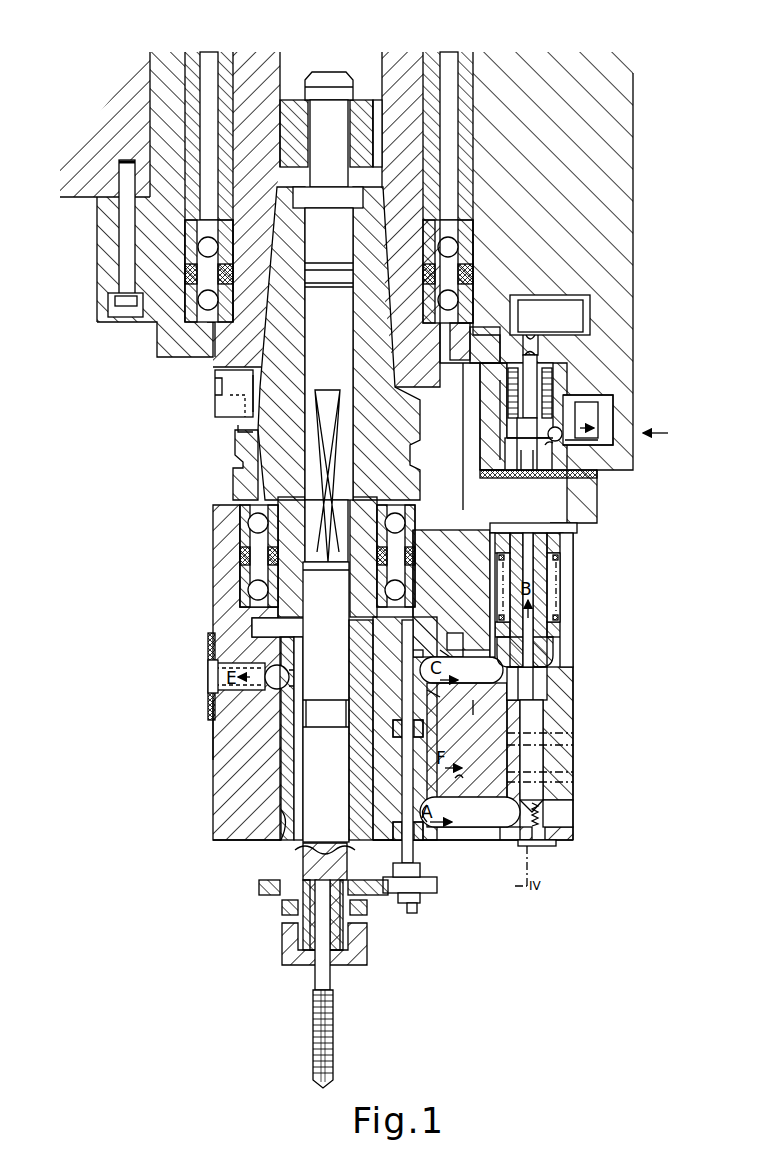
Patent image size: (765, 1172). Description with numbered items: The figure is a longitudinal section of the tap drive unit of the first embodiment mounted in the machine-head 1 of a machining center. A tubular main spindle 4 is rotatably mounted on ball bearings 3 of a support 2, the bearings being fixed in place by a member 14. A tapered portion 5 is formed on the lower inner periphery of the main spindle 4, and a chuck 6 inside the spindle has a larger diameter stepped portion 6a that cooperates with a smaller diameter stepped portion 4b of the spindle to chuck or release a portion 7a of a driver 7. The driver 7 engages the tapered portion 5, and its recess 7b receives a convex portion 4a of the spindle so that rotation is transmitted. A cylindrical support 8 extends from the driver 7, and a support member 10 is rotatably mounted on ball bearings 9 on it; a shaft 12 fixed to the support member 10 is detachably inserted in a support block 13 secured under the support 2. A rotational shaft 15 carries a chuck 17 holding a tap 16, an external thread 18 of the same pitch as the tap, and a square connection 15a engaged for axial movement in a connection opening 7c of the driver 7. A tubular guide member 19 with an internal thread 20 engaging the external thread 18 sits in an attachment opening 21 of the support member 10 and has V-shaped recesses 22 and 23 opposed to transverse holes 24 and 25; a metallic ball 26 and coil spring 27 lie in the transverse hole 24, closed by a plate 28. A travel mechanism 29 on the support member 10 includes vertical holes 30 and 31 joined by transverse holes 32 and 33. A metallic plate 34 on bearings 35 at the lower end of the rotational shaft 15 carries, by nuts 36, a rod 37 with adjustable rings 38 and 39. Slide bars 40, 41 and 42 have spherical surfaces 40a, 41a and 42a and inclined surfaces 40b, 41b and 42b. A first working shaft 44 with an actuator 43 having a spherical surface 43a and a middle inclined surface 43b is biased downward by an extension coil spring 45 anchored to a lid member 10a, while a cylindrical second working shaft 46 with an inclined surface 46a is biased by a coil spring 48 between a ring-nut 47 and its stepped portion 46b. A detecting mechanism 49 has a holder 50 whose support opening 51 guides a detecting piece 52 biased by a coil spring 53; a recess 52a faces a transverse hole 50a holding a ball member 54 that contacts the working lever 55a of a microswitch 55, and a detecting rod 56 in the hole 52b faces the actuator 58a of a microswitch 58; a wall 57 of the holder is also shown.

The machine-head 1 is at (68, 199).
The support 2 is at (103, 323).
The ball bearings 3 is at (475, 250).
The main spindle 4 is at (398, 72).
The convex portion 4a is at (215, 407).
The smaller diameter stepped portion 4b is at (374, 125).
The tapered portion 5 is at (378, 345).
The chuck 6 is at (387, 120).
The larger diameter stepped portion 6a is at (378, 110).
The driver 7 is at (233, 478).
The portion of driver 7a is at (329, 72).
The recess 7b is at (238, 432).
The connection opening 7c is at (345, 498).
The cylindrical support 8 is at (391, 640).
The ball bearings 9 is at (420, 516).
The support member 10 is at (213, 522).
The lid member 10a is at (547, 848).
The shaft 12 is at (498, 523).
The support block 13 is at (599, 482).
The member 14 is at (158, 358).
The rotational shaft 15 is at (302, 857).
The connection 15a is at (330, 392).
The tap 16 is at (335, 1040).
The chuck 17 is at (368, 956).
The external thread 18 is at (255, 628).
The guide member 19 is at (270, 813).
The internal thread 20 is at (283, 718).
The attachment opening 21 is at (290, 842).
The V-shaped recess 22 is at (252, 664).
The V-shaped recess 23 is at (379, 776).
The transverse hole 24 is at (246, 716).
The transverse hole 25 is at (474, 705).
The metallic ball 26 is at (270, 688).
The coil spring 27 is at (211, 662).
The plate 28 is at (210, 682).
The travel mechanism 29 is at (470, 842).
The vertical hole 30 is at (442, 648).
The vertical hole 31 is at (560, 720).
The transverse hole 32 is at (449, 652).
The transverse hole 33 is at (462, 777).
The metallic plate 34 is at (386, 900).
The bearings 35 is at (366, 872).
The nuts 36 is at (418, 870).
The rod 37 is at (412, 916).
The ring 38 is at (430, 697).
The ring 39 is at (424, 728).
The slide bar 40 is at (516, 718).
The spherical surface 40a is at (360, 752).
The inclined surface 40b is at (505, 690).
The slide bar 41 is at (474, 662).
The spherical surface 41a is at (417, 650).
The inclined surface 41b is at (458, 638).
The slide bar 42 is at (481, 828).
The spherical surface 42a is at (432, 836).
The inclined surface 42b is at (516, 790).
The actuator 43 is at (536, 790).
The spherical surface 43a is at (504, 842).
The middle inclined surface 43b is at (510, 757).
The first working shaft 44 is at (542, 650).
The extension coil spring 45 is at (555, 843).
The second working shaft 46 is at (562, 632).
The inclined surface 46a is at (452, 672).
The stepped portion 46b is at (556, 602).
The ring-nut 47 is at (576, 524).
The coil spring 48 is at (567, 569).
The detecting mechanism 49 is at (670, 434).
The holder 50 is at (633, 386).
The transverse hole 50a is at (612, 400).
The support opening 51 is at (550, 377).
The detecting piece 52 is at (545, 462).
The recess 52a is at (560, 450).
The hole 52b is at (546, 477).
The coil spring 53 is at (540, 402).
The ball member 54 is at (560, 440).
The microswitch 55 is at (606, 416).
The working lever 55a is at (572, 441).
The detecting rod 56 is at (522, 433).
The housing wall 57 is at (502, 404).
The microswitch 58 is at (562, 307).
The actuator 58a is at (541, 346).